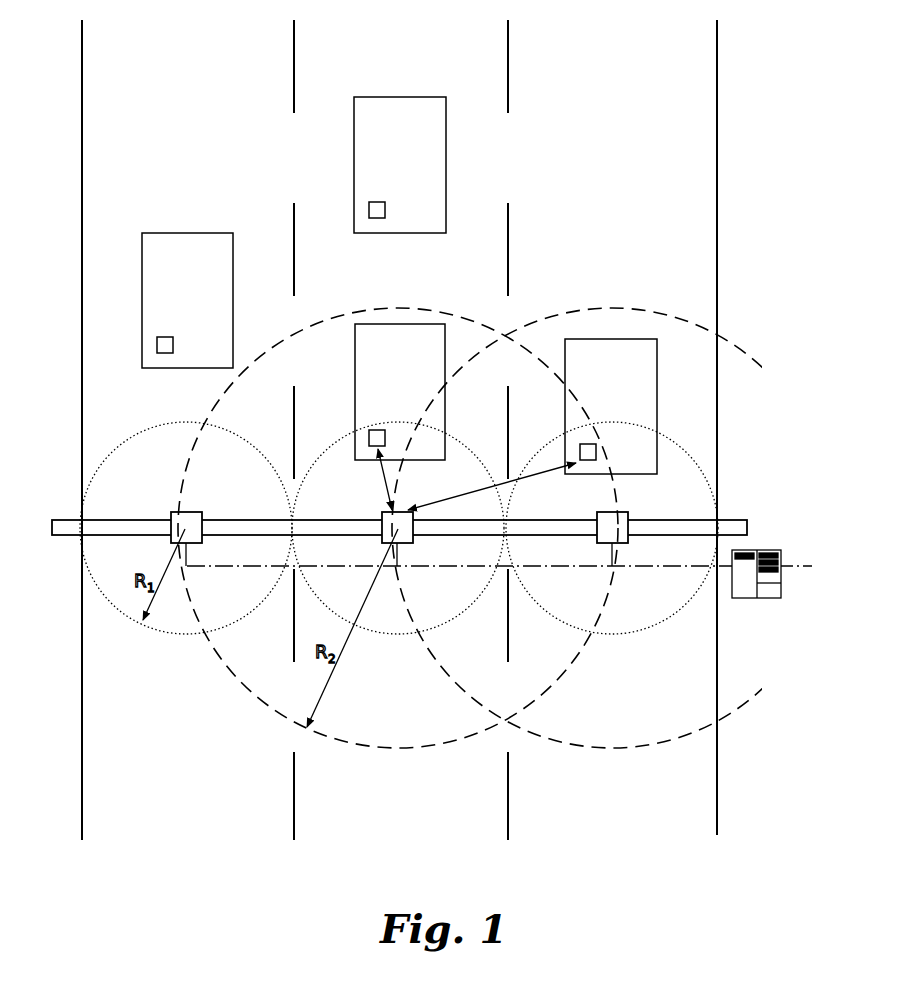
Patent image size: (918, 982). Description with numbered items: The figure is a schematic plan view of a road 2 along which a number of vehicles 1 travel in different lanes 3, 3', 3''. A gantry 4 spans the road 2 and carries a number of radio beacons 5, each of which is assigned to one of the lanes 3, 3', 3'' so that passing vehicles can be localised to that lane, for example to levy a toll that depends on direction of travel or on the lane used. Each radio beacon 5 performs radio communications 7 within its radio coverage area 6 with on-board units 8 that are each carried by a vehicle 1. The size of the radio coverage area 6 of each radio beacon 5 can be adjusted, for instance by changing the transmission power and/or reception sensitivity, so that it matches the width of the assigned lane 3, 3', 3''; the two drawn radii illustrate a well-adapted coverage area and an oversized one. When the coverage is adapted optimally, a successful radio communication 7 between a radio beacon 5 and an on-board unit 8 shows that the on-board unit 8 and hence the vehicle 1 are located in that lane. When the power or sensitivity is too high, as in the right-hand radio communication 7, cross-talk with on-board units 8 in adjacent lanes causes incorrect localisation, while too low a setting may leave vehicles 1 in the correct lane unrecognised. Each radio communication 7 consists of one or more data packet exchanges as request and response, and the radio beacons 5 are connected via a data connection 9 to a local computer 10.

The vehicle 1 is at (142, 277).
The road 2 is at (718, 808).
The lane 3 is at (240, 430).
The lane 3' is at (458, 430).
The lane 3'' is at (569, 765).
The gantry 4 is at (73, 538).
The radio beacon 5 is at (172, 514).
The radio coverage area 6 is at (162, 630).
The radio communication 7 is at (388, 478).
The on-board unit 8 is at (173, 340).
The data connection 9 is at (645, 566).
The local computer 10 is at (752, 598).